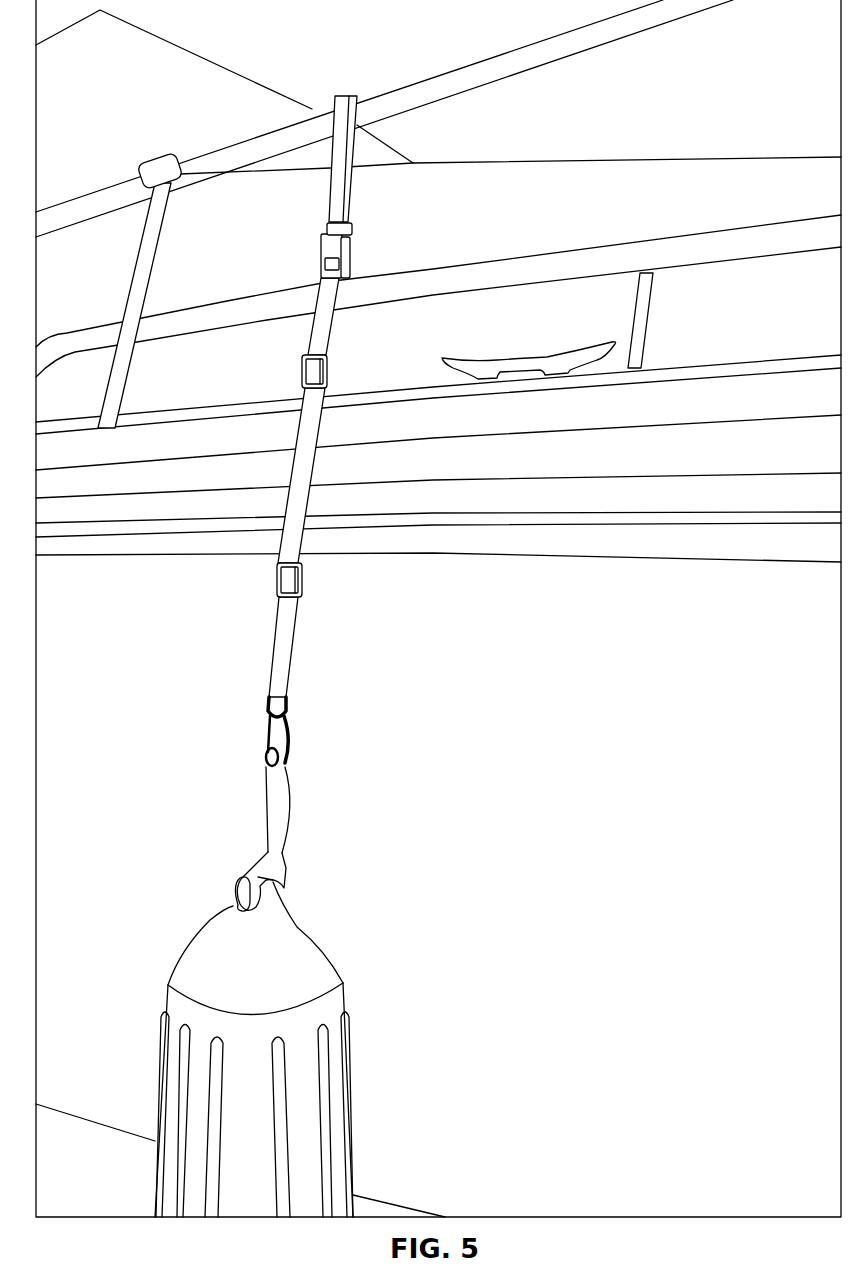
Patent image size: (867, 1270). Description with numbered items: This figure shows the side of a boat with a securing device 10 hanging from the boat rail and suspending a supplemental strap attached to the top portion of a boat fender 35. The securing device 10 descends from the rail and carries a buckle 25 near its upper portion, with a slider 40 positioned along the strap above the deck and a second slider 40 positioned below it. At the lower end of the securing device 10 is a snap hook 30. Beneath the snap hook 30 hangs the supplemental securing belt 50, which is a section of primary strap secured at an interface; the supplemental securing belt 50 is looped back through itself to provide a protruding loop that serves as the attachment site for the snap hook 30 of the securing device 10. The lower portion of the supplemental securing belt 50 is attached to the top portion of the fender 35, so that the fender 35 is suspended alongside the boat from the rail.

The securing device 10 is at (378, 324).
The buckle 25 is at (350, 240).
The snap hook 30 is at (266, 733).
The fender 35 is at (259, 1158).
The slider 40 is at (302, 360).
The supplemental securing belt 50 is at (276, 828).